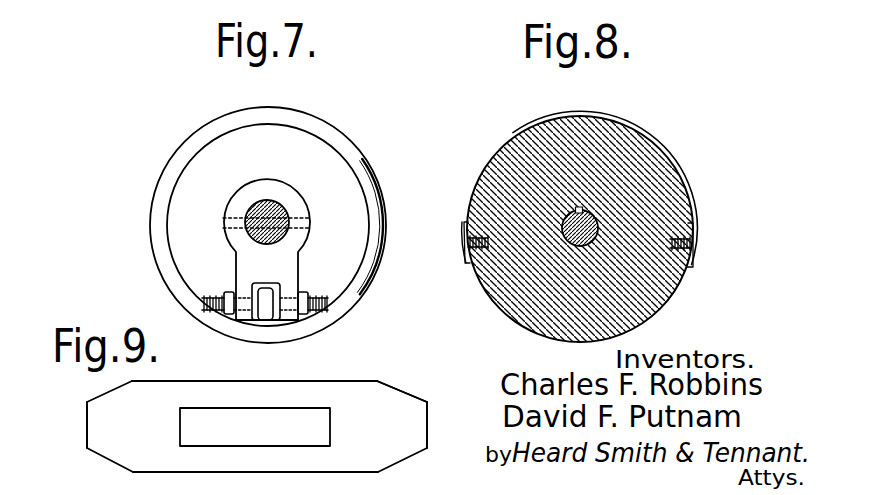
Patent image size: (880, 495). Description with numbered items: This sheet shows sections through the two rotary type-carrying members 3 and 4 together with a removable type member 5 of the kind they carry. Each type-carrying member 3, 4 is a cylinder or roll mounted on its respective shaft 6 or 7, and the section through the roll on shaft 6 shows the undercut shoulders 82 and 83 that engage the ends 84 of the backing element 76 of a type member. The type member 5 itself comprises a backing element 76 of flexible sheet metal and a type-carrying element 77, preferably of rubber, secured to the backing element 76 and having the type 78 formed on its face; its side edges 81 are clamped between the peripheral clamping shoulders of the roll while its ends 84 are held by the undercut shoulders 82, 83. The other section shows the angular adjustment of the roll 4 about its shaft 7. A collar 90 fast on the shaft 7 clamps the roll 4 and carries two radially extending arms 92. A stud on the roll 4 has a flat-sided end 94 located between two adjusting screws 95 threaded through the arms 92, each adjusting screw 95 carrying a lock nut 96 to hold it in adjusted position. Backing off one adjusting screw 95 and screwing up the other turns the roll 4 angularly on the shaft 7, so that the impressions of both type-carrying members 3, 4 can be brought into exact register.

In FIG. 8, the rotary type-carrying member 3 is at (662, 293).
In FIG. 7, the rotary type-carrying member 4 is at (255, 137).
In FIG. 9, the type member 5 is at (330, 388).
In FIG. 8, the shaft 6 is at (565, 240).
In FIG. 7, the shaft 7 is at (277, 205).
In FIG. 8, the backing element 76 is at (688, 182).
In FIG. 9, the backing element 76 is at (367, 393).
In FIG. 7, the type-carrying element 77 is at (384, 207).
In FIG. 8, the type-carrying element 77 is at (648, 132).
In FIG. 9, the type-carrying element 77 is at (325, 443).
In FIG. 9, the type 78 is at (219, 433).
In FIG. 9, the side edges 81 is at (235, 381).
In FIG. 8, the undercut shoulder 82 is at (467, 230).
In FIG. 8, the undercut shoulder 83 is at (693, 233).
In FIG. 9, the ends 84 is at (86, 420).
In FIG. 7, the collar 90 is at (291, 181).
In FIG. 7, the radially extending arms 92 is at (288, 321).
In FIG. 7, the flat-sided end 94 is at (267, 292).
In FIG. 7, the adjusting screws 95 is at (222, 298).
In FIG. 7, the lock nut 96 is at (228, 292).